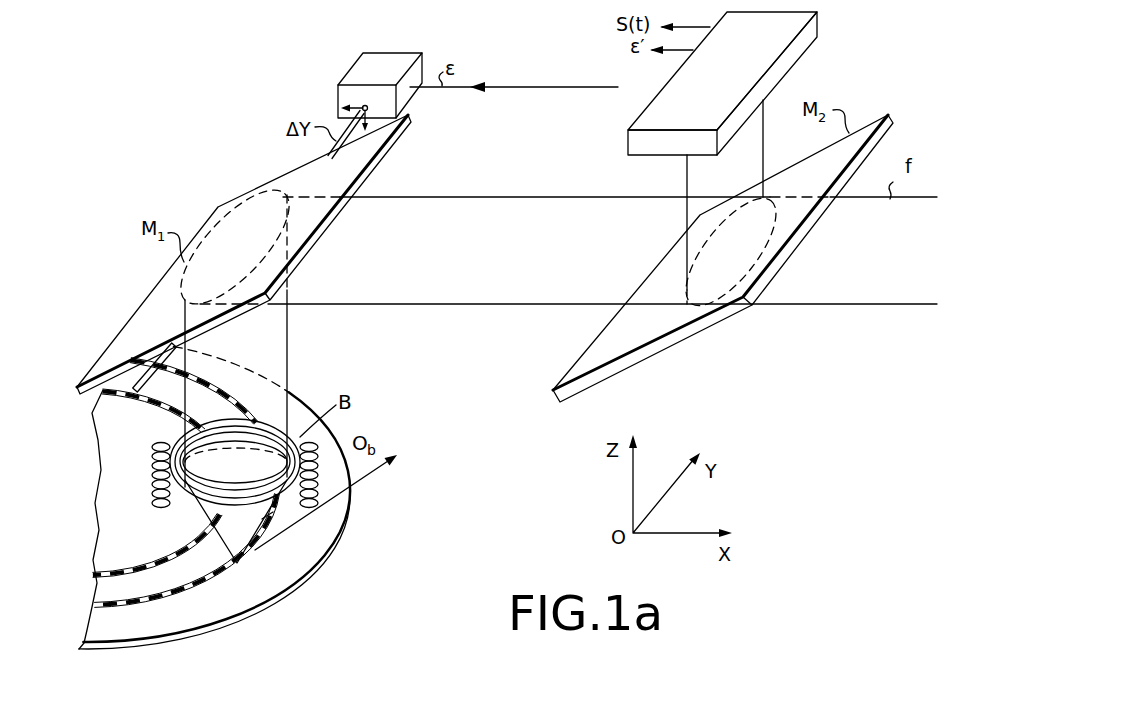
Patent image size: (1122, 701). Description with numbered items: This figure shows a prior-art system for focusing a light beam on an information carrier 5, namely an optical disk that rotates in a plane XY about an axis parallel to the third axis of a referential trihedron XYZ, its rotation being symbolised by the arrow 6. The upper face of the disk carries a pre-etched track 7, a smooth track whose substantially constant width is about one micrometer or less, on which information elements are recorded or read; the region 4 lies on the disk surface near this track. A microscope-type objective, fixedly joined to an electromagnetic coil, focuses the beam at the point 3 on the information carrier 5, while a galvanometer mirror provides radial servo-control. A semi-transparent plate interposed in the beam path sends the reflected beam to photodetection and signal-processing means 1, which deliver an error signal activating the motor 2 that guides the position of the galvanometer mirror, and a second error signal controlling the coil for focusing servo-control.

The photodetection and signal-processing means 1 is at (800, 48).
The motor 2 is at (355, 70).
The focusing point 3 is at (227, 543).
The spot position on track 4 is at (268, 527).
The information carrier 5 is at (333, 540).
The arrow 6 is at (377, 476).
The pre-etched track 7 is at (168, 560).